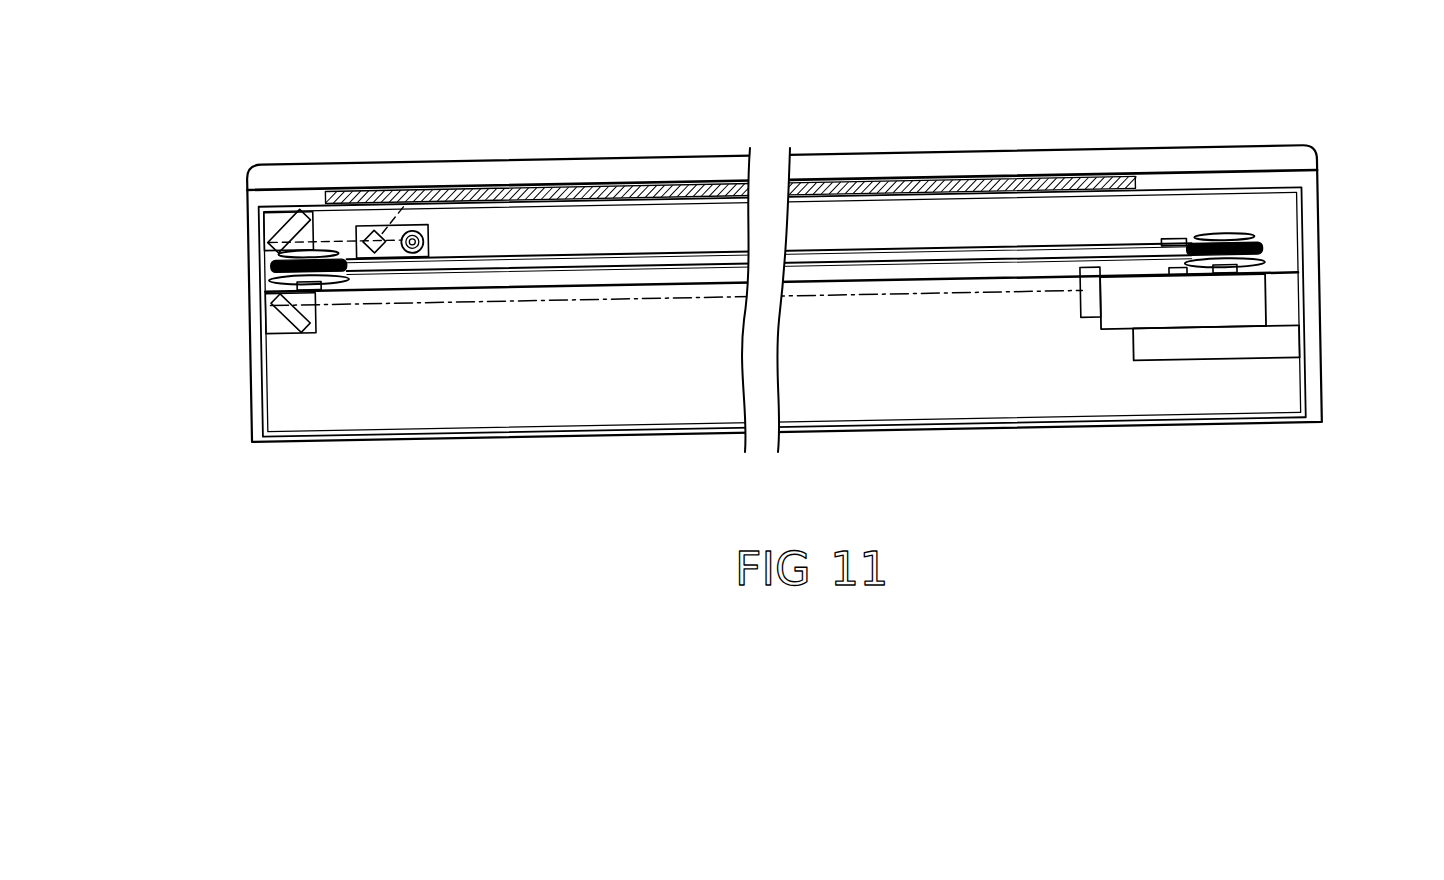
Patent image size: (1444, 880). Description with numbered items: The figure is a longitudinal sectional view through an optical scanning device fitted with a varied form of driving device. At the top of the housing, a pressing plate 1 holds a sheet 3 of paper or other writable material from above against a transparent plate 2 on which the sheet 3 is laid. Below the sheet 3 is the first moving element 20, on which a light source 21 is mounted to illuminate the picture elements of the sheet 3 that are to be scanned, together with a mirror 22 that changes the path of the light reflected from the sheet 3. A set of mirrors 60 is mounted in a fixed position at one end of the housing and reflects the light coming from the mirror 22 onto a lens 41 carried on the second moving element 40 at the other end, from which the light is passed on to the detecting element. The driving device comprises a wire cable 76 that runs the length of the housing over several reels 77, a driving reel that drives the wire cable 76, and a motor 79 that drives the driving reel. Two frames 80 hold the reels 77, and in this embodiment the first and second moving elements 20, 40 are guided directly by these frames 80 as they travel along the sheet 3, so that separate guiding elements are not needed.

The pressing plate 1 is at (957, 166).
The transparent plate 2 is at (870, 184).
The sheet 3 is at (907, 184).
The first moving element 20 is at (394, 256).
The light source 21 is at (428, 240).
The mirror 22 is at (380, 230).
The second moving element 40 is at (1181, 312).
The lens 41 is at (1086, 303).
The set of mirrors 60 is at (285, 326).
The wire cable 76 is at (701, 252).
The reels 77 is at (288, 263).
The motor 79 is at (1260, 347).
The frames 80 is at (696, 290).